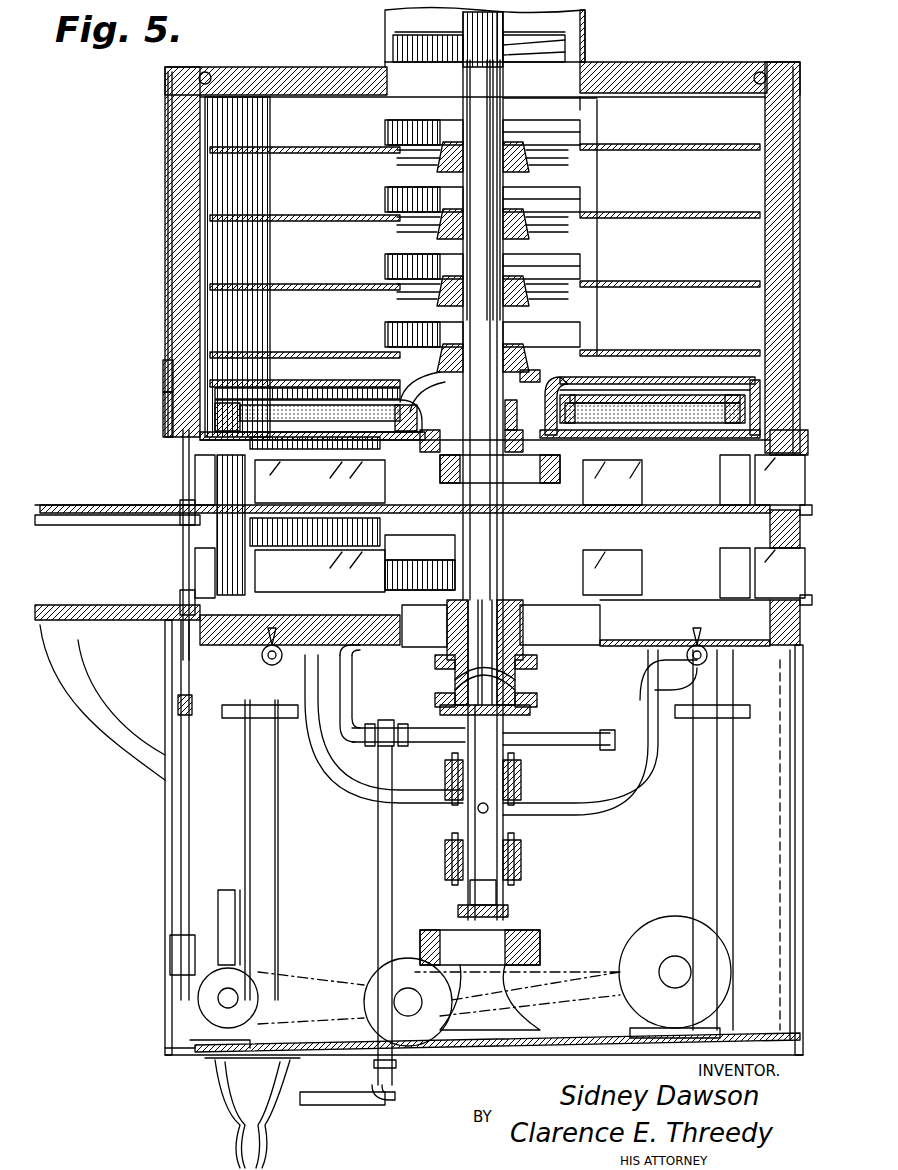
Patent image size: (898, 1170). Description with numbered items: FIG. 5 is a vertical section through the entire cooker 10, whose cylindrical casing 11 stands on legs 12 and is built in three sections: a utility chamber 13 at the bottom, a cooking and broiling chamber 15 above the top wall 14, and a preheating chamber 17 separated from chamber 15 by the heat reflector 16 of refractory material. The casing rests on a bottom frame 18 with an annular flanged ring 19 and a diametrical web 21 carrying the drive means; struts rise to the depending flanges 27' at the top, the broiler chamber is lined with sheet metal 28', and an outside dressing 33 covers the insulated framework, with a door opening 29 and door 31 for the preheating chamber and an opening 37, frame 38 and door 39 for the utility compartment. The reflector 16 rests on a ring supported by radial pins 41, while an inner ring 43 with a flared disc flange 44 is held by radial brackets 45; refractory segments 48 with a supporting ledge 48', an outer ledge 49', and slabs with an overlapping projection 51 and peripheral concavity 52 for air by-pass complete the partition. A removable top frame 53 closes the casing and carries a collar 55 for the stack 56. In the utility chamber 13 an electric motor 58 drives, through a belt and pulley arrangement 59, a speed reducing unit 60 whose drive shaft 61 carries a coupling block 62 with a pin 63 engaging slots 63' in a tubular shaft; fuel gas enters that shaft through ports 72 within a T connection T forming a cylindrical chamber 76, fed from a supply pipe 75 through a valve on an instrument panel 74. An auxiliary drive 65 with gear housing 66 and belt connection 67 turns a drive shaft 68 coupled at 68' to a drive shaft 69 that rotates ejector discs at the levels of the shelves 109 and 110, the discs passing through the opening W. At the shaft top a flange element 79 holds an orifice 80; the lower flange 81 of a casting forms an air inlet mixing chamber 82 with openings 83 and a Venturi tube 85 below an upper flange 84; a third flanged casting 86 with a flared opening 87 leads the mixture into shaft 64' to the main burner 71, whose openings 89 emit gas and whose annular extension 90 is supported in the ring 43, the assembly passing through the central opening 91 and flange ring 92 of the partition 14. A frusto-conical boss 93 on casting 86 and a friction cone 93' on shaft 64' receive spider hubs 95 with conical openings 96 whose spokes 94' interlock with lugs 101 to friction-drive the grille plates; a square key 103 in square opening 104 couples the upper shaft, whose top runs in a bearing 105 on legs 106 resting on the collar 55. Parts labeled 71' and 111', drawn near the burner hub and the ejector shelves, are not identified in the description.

The cooker 10 is at (152, 148).
The cylindrical casing 11 is at (175, 250).
The legs 12 is at (228, 1128).
The utility chamber 13 is at (660, 880).
The top wall 14 is at (618, 650).
The cooking and broiling chamber 15 is at (685, 555).
The heat reflector 16 is at (652, 405).
The preheating chamber 17 is at (675, 253).
The bottom frame 18 is at (512, 1048).
The annular flanged ring 19 is at (168, 1030).
The web 21 is at (478, 1040).
The depending flanges 27' is at (145, 88).
The sheet metal lining 28' is at (402, 524).
The door opening 29 is at (295, 250).
The door 31 is at (358, 261).
The outside dressing 33 is at (170, 218).
The opening 37 is at (265, 850).
The frame 38 is at (255, 770).
The door 39 is at (265, 818).
The radially extending pins 41 is at (740, 420).
The inner ring 43 is at (522, 400).
The flared disc flange 44 is at (560, 432).
The radially extending brackets 45 is at (658, 380).
The arcuate segments 48 is at (419, 384).
The supporting ledge 48' is at (602, 381).
The supporting ledge 49' is at (704, 368).
The overlapping projection 51 is at (812, 372).
The concavity 52 is at (705, 418).
The top frame 53 is at (265, 62).
The collar 55 is at (390, 40).
The stack 56 is at (585, 22).
The electric motor 58 is at (720, 945).
The belt and pulley arrangement 59 is at (615, 958).
The speed reducing unit 60 is at (528, 942).
The drive shaft 61 is at (470, 920).
The coupling block 62 is at (510, 915).
The radially extending pin 63 is at (468, 895).
The slots 63' is at (442, 910).
The tubular shaft 64' is at (505, 751).
The auxiliary drive mechanism 65 is at (240, 935).
The speed reducing gear housing 66 is at (235, 910).
The belt and pulley connection 67 is at (345, 945).
The drive shaft 68 is at (196, 810).
The coupling 68' is at (211, 694).
The drive shaft 69 is at (181, 555).
The main burner 71 is at (485, 456).
The hub passage 71' is at (547, 451).
The ports 72 is at (455, 815).
The instrument panel 74 is at (705, 810).
The supply pipe 75 is at (345, 1108).
The cylindrical chamber 76 is at (520, 810).
The flange element 79 is at (520, 705).
The orifice 80 is at (510, 685).
The lower flange 81 is at (528, 698).
The air inlet chamber 82 is at (525, 680).
The openings 83 is at (440, 695).
The upper flange 84 is at (530, 668).
The Venturi tube 85 is at (440, 672).
The third flanged casting 86 is at (545, 655).
The flared opening 87 is at (460, 652).
The openings 89 is at (405, 436).
The annular extension 90 is at (448, 436).
The central opening 91 is at (390, 655).
The upstanding flange ring 92 is at (375, 628).
The frusto-conical boss 93 is at (450, 596).
The friction cone 93' is at (531, 544).
The spokes 94' is at (425, 628).
The hub formation 95 is at (540, 615).
The frusto-conical opening 96 is at (515, 628).
The lugs 101 is at (413, 546).
The square coupling key 103 is at (489, 411).
The square opening 104 is at (446, 407).
The bearing 105 is at (535, 32).
The radially extending legs 106 is at (530, 50).
The discharge shelf 109 is at (100, 625).
The shelf 110 is at (100, 525).
The arm 111' is at (245, 662).
The T connection T is at (445, 785).
The opening W is at (472, 526).